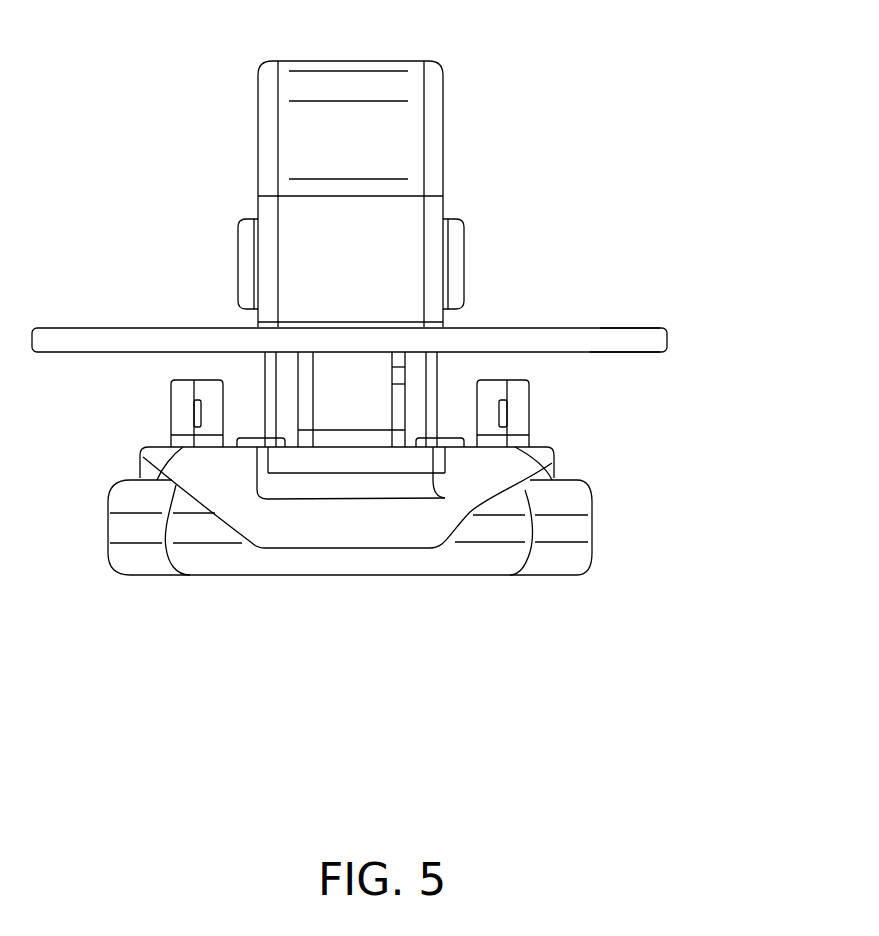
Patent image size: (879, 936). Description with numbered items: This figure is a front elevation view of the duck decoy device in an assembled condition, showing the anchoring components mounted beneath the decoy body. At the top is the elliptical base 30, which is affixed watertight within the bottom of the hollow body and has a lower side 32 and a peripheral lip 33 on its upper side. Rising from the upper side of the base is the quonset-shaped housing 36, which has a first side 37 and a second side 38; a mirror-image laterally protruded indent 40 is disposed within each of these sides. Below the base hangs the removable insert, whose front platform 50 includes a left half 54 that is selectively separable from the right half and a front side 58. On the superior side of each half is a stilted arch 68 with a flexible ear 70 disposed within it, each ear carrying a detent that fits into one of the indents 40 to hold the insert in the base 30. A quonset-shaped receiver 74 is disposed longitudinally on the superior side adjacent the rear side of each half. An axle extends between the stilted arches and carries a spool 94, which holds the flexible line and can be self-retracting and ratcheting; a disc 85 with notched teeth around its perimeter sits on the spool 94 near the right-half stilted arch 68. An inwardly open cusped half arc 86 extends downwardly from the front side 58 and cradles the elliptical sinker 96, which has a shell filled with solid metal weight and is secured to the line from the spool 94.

The elliptical base 30 is at (668, 342).
The lower side 32 is at (611, 352).
The peripheral lip 33 is at (630, 352).
The quonset-shaped housing 36 is at (443, 68).
The first side 37 is at (445, 125).
The second side 38 is at (258, 122).
The laterally protruded indent 40 is at (238, 264).
The front platform 50 is at (553, 466).
The left half 54 is at (543, 444).
The front side 58 is at (553, 475).
The stilted arch 68 is at (402, 368).
The flexible ear 70 is at (282, 399).
The quonset-shaped receiver 74 is at (530, 383).
The disc 85 is at (405, 372).
The cusped half arc 86 is at (233, 480).
The spool 94 is at (342, 402).
The elliptical sinker 96 is at (595, 530).